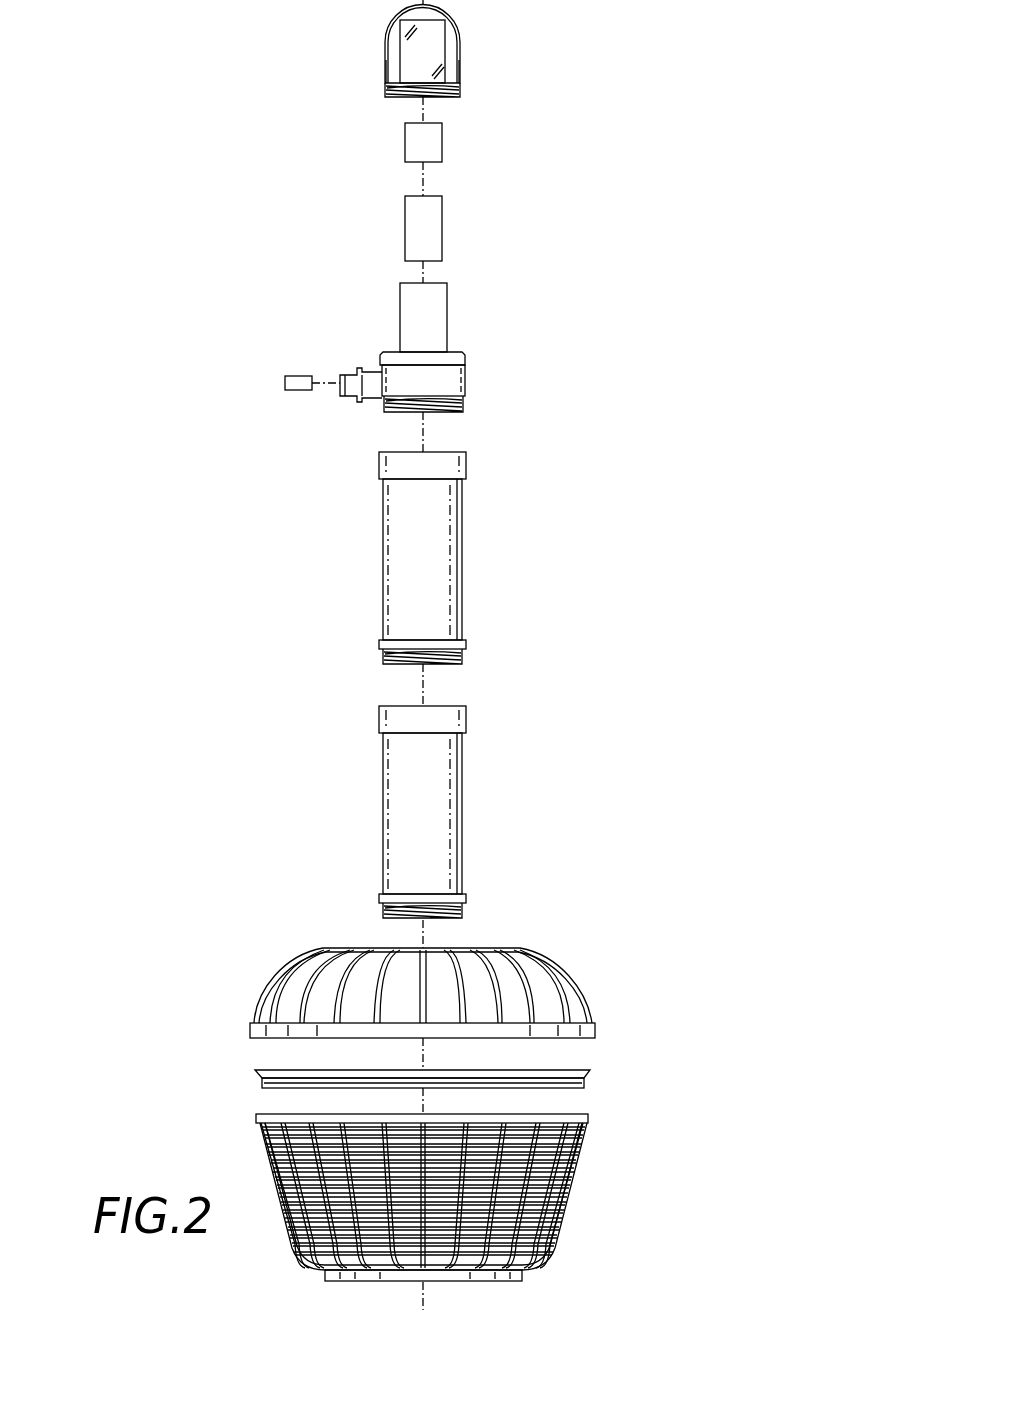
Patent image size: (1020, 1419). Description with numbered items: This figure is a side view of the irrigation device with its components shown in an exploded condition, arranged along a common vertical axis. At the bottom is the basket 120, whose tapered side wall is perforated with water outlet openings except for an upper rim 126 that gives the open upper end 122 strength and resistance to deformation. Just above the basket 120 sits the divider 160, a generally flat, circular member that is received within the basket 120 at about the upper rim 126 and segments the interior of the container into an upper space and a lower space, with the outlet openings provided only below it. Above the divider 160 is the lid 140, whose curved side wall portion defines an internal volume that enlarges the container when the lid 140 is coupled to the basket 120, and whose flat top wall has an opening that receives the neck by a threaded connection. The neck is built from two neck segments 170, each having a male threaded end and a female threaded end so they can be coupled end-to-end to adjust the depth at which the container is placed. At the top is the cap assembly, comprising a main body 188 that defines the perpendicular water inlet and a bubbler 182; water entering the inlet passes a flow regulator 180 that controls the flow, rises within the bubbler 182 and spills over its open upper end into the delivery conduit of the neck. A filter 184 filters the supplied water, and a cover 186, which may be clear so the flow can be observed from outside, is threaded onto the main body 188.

The basket 120 is at (504, 1195).
The open upper end 122 is at (582, 1115).
The upper rim 126 is at (587, 1121).
The lid 140 is at (570, 972).
The divider 160 is at (580, 1078).
The neck segments 170 is at (463, 560).
The flow regulator 180 is at (410, 237).
The bubbler 182 is at (447, 302).
The filter 184 is at (435, 145).
The cover 186 is at (450, 38).
The main body 188 is at (467, 378).